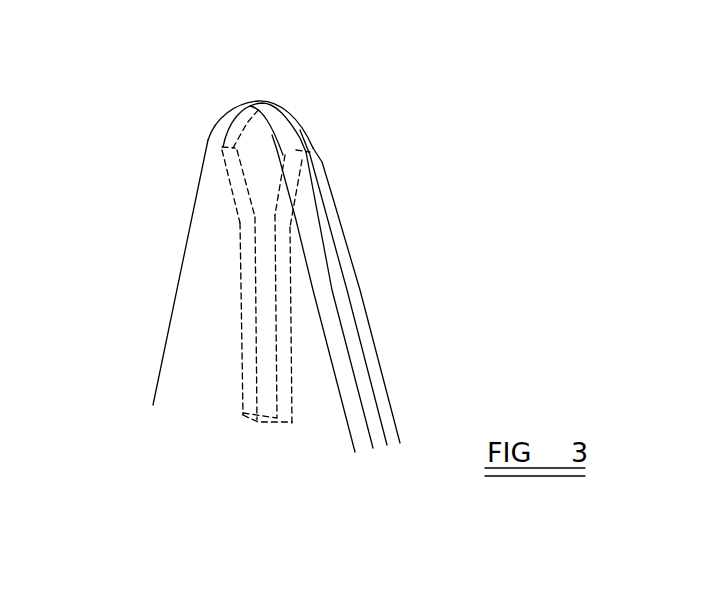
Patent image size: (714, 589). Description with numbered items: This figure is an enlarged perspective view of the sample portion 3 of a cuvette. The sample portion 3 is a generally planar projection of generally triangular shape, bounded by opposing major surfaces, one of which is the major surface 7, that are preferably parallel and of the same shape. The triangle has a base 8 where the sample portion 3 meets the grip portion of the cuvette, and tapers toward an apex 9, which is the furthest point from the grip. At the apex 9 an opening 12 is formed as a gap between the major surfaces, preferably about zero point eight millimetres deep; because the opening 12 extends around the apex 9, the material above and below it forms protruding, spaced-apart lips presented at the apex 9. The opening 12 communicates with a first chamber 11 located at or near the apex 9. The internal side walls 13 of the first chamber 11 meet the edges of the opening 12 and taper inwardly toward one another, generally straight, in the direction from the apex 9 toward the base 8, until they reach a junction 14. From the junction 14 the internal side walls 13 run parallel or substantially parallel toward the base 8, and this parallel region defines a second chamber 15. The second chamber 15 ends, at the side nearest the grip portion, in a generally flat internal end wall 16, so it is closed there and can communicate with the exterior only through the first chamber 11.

The sample portion 3 is at (425, 201).
The major surface 7 is at (377, 353).
The base 8 is at (207, 404).
The apex 9 is at (262, 105).
The first chamber 11 is at (257, 158).
The opening 12 is at (290, 125).
The internal side walls 13 is at (243, 195).
The junction 14 is at (280, 230).
The second chamber 15 is at (267, 332).
The internal end wall 16 is at (268, 425).